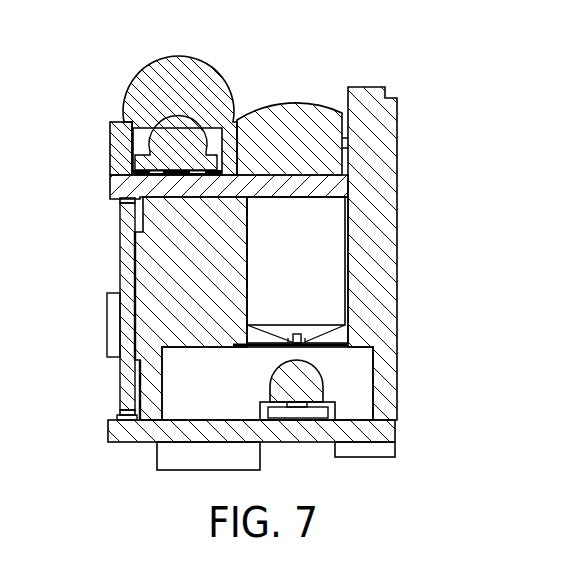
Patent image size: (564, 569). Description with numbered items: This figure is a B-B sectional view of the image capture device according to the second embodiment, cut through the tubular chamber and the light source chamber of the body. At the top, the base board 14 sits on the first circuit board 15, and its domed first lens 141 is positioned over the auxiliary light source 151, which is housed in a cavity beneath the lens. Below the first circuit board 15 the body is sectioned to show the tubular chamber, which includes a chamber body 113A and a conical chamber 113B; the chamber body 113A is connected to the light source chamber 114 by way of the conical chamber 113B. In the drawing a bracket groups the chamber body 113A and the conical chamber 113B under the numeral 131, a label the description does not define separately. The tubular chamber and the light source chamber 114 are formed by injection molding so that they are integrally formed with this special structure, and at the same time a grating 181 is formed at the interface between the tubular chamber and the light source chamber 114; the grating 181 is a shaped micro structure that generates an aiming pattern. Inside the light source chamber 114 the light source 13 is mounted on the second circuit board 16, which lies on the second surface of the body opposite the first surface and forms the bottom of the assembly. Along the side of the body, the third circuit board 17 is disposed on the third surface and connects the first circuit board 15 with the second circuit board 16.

The first lens 141 is at (179, 78).
The base board 14 is at (112, 122).
The auxiliary light source 151 is at (183, 148).
The first circuit board 15 is at (110, 183).
The third circuit board 17 is at (122, 246).
The second circuit board 16 is at (118, 431).
The lens unit 131 is at (492, 190).
The chamber body 113A is at (305, 218).
The conical chamber 113B is at (298, 335).
The grating 181 is at (305, 340).
The light source chamber 114 is at (357, 370).
The light source 13 is at (298, 385).